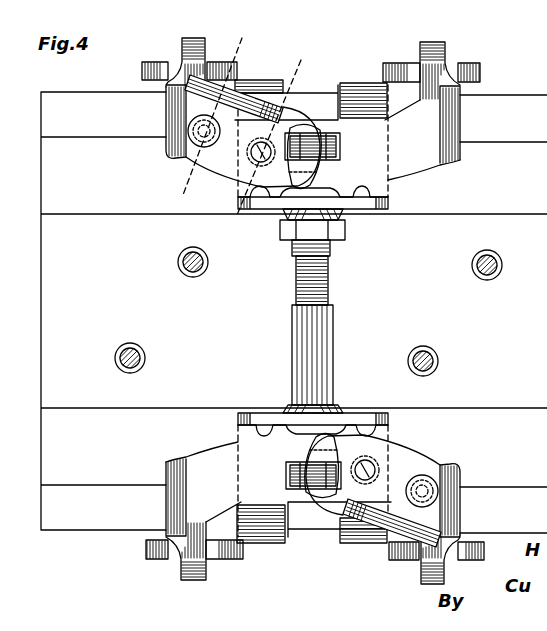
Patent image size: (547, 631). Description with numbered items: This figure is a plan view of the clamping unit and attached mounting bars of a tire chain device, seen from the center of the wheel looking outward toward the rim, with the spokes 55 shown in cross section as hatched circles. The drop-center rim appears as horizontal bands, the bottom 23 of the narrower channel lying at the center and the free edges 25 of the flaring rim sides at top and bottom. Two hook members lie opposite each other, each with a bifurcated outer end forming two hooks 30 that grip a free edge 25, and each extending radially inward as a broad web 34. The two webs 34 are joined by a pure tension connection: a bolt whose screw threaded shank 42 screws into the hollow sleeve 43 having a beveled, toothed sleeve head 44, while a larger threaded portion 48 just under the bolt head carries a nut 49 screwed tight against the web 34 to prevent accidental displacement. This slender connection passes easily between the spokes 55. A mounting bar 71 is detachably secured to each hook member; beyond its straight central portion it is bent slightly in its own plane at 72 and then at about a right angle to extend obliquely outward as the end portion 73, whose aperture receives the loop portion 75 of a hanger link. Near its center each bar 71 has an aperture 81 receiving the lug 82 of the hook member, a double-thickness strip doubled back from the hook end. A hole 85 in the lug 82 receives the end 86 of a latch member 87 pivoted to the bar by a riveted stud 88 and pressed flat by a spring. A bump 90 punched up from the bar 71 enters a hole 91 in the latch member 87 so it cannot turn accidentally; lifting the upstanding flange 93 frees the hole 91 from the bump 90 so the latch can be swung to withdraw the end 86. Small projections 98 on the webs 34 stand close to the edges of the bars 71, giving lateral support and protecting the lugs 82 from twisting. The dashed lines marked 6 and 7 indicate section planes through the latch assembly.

The section line 6- 6 is at (274, 45).
The section line 7- 7 is at (326, 68).
The bottom of the narrower channel 23 is at (423, 311).
The free edges 25 is at (535, 96).
The hook portion 30 is at (356, 80).
The radially inward portion of the hook member 34 is at (388, 205).
The screw threaded shank 42 is at (328, 292).
The hollow sleeve 43 is at (333, 322).
The sleeve head 44 is at (290, 412).
The screw threaded portion 48 is at (330, 250).
The nut 49 is at (345, 226).
The spokes 55 is at (183, 282).
The mounting bar 71 is at (393, 169).
The slightly bent portion of the mounting bar 72 is at (430, 125).
The obliquely extending end portion 73 is at (196, 40).
The loop portion 75 is at (142, 69).
The aperture 81 is at (341, 142).
The lug portion 82 is at (340, 150).
The hole 85 is at (337, 160).
The end of the latch member 86 is at (318, 170).
The latch member 87 is at (183, 150).
The riveted stud 88 is at (188, 128).
The bump 90 is at (250, 155).
The hole 91 is at (262, 143).
The upstanding flange 93 is at (231, 90).
The projections 98 is at (388, 188).